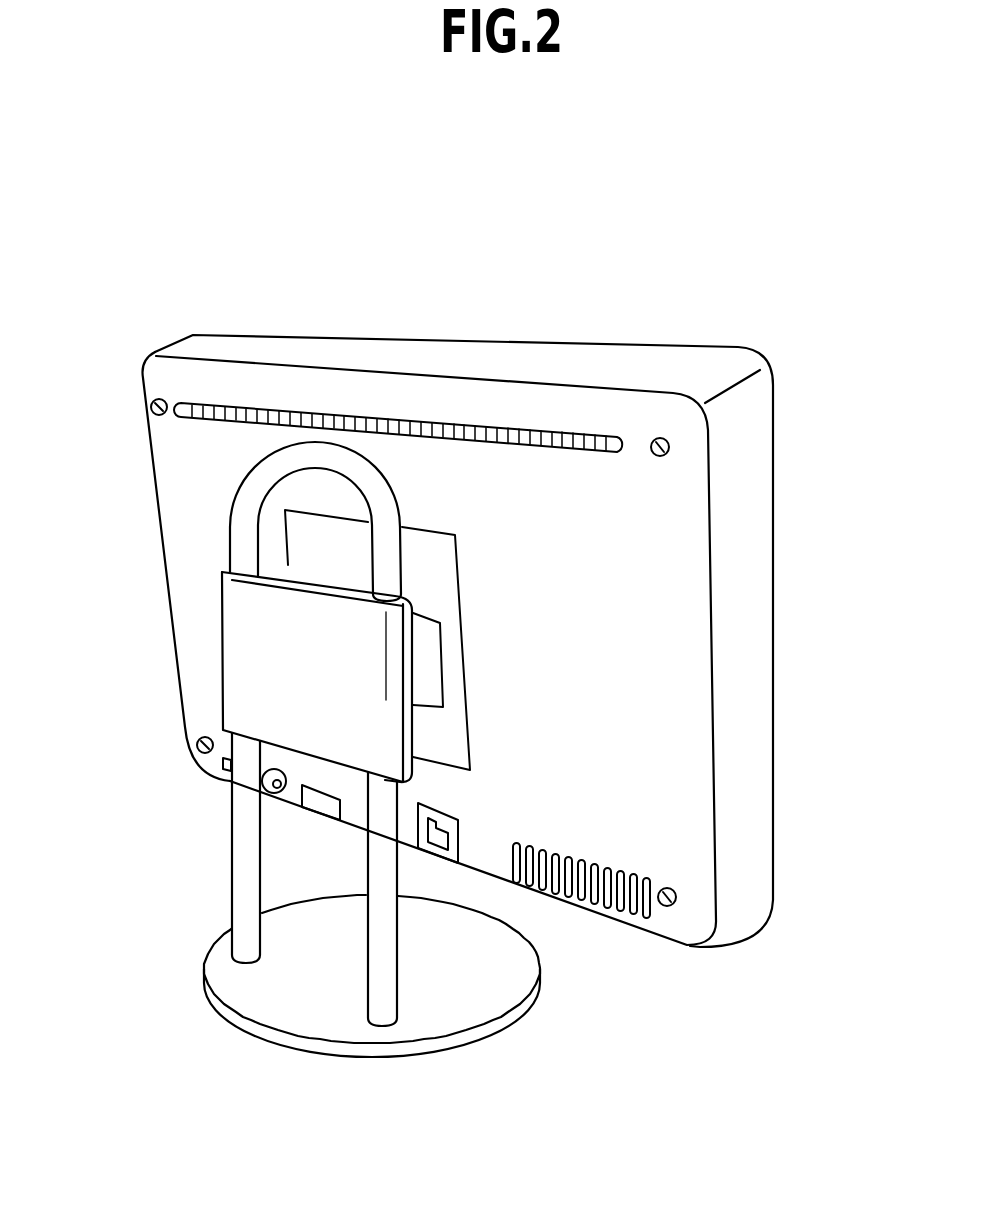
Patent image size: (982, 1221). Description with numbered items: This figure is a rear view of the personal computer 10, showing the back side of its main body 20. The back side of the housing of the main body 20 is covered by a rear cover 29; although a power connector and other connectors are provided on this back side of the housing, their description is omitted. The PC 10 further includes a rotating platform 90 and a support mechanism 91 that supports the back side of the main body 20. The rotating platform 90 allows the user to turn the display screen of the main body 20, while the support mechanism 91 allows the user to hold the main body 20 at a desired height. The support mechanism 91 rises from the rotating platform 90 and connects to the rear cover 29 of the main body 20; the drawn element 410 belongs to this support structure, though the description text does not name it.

The personal computer 10 is at (541, 333).
The main body 20 is at (631, 375).
The rear cover 29 is at (673, 580).
The support mechanism 91 is at (199, 617).
The support pole 410 is at (243, 840).
The rotating platform 90 is at (483, 993).